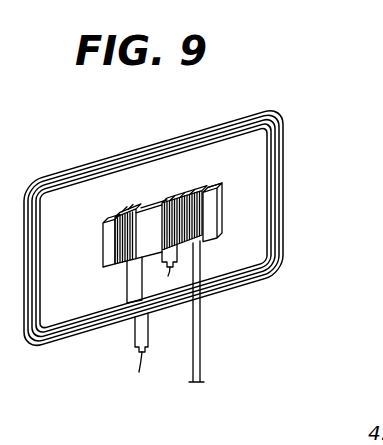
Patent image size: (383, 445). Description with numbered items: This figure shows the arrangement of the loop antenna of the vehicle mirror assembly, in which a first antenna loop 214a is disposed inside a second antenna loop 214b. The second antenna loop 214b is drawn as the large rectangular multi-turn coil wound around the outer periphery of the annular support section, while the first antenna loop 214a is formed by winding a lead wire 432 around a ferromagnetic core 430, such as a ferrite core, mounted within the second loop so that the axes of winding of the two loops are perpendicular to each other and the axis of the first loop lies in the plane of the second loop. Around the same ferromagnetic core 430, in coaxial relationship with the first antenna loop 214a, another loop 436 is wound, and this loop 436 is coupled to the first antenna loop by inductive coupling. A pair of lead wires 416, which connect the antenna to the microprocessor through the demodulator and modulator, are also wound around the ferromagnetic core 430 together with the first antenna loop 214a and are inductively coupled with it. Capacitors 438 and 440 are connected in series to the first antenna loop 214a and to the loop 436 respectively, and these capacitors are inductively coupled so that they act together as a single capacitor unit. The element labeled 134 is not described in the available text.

The coil antenna frame 134 is at (284, 113).
The first antenna loop 214a is at (216, 180).
The second antenna loop 214b is at (124, 145).
The ferromagnetic core 430 is at (212, 211).
The lead wire 432 is at (168, 199).
The loop 436 is at (118, 216).
The capacitor 438 is at (167, 273).
The capacitor 440 is at (141, 331).
The lead wires 416 is at (200, 360).